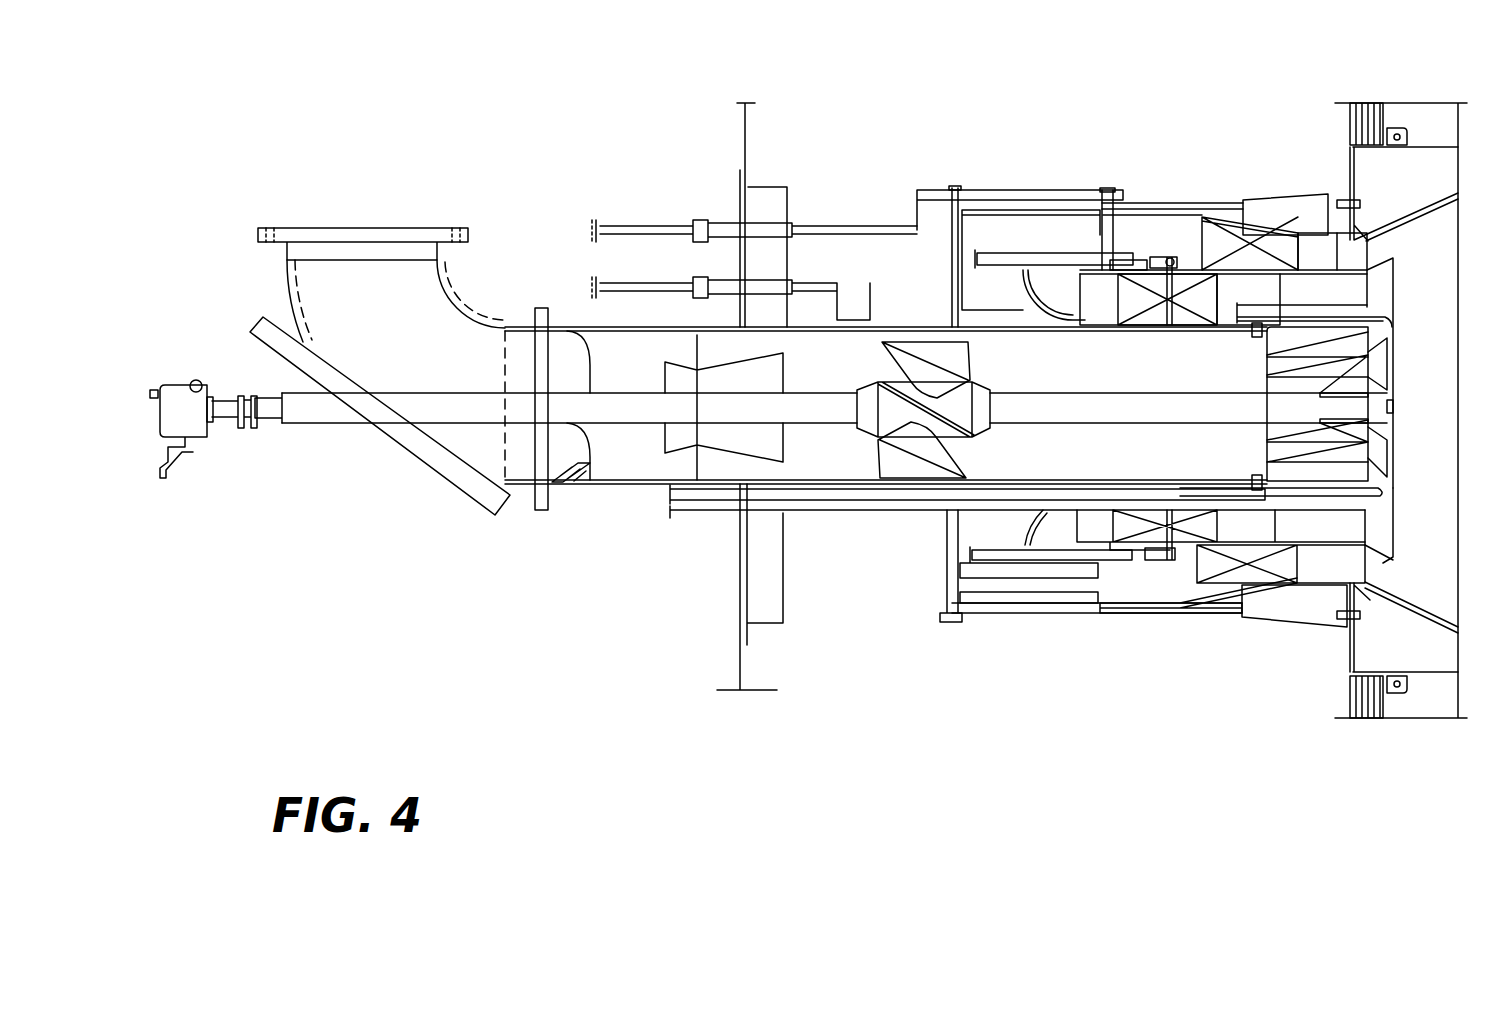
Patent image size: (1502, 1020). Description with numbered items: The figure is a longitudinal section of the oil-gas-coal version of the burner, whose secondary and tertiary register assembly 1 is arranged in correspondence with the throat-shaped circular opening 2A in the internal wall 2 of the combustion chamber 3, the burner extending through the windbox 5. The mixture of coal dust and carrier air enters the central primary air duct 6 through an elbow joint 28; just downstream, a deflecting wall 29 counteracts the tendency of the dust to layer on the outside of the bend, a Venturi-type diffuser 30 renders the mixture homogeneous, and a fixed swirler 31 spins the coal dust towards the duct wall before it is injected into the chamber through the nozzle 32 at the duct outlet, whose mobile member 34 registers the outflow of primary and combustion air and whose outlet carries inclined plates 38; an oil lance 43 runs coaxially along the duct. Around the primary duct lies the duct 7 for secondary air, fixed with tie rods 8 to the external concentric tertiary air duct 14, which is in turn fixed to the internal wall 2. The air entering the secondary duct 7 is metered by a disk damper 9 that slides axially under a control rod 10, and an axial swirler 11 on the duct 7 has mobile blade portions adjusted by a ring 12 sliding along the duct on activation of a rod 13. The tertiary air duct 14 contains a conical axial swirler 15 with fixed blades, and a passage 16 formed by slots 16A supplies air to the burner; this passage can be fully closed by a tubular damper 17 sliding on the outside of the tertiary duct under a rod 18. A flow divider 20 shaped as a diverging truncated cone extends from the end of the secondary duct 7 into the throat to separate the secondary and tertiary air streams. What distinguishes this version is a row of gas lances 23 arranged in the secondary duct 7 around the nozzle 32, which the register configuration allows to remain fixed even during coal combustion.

The secondary and tertiary register assembly 1 is at (848, 576).
The internal wall 2 is at (1428, 178).
The circular opening 2A is at (1446, 477).
The combustion chamber 3 is at (1486, 523).
The windbox 5 is at (887, 649).
The primary air duct 6 is at (636, 488).
The secondary air duct 7 is at (1250, 283).
The tie rods 8 is at (1337, 237).
The disk damper 9 is at (1023, 270).
The control rod 10 is at (625, 283).
The axial swirler 11 is at (1195, 298).
The ring 12 is at (1147, 270).
The rod 13 is at (1080, 240).
The tertiary air duct 14 is at (1313, 250).
The conical axial swirler 15 is at (1218, 578).
The passage 16 is at (1085, 607).
The slots 16A is at (1008, 563).
The tubular damper 17 is at (1148, 610).
The rod 18 is at (666, 224).
The flow divider 20 is at (1393, 258).
The gas lances 23 is at (1375, 512).
The elbow joint 28 is at (393, 268).
The deflecting wall 29 is at (567, 482).
The Venturi-type diffuser 30 is at (730, 445).
The fixed swirler 31 is at (920, 367).
The nozzle 32 is at (1308, 478).
The mobile member 34 is at (1372, 440).
The inclined plates 38 is at (1380, 360).
The oil lance 43 is at (1382, 402).